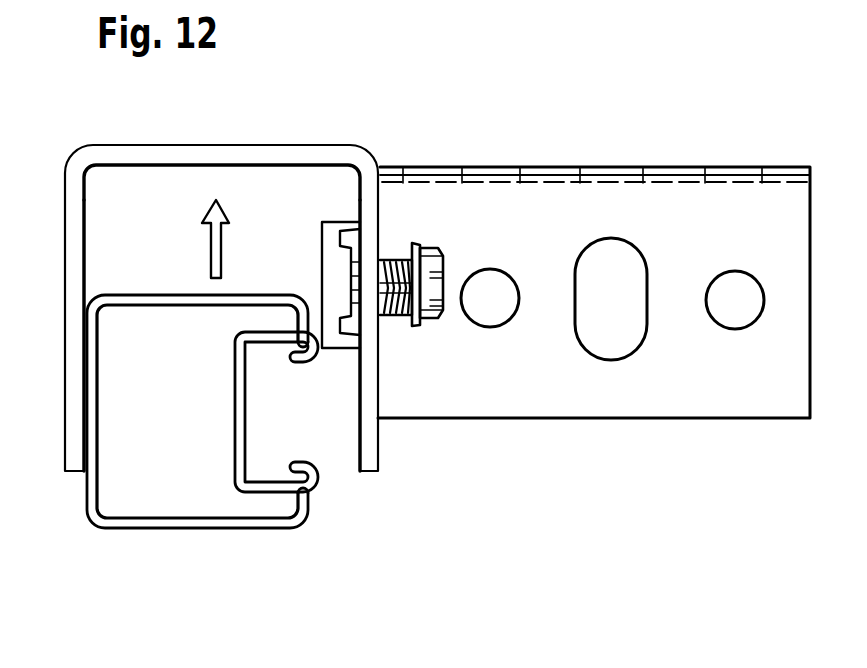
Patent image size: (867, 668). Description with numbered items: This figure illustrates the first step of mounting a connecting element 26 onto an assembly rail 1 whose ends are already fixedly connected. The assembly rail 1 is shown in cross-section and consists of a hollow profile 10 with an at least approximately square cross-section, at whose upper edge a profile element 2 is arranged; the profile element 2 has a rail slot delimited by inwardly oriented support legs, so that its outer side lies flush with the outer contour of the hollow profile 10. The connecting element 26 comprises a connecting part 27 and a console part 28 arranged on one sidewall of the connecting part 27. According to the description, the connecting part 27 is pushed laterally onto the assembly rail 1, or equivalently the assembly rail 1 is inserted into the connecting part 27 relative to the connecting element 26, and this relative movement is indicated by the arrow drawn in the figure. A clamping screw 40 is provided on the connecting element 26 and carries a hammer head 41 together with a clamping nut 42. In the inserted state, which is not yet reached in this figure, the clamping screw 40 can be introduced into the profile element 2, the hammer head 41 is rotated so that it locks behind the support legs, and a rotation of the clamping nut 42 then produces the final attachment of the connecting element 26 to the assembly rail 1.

The assembly rail 1 is at (163, 444).
The profile element 2 is at (235, 383).
The hollow profile 10 is at (150, 526).
The connecting element 26 is at (231, 279).
The connecting part 27 is at (118, 157).
The console part 28 is at (775, 205).
The clamping screw 40 is at (394, 324).
The hammer head 41 is at (335, 258).
The clamping nut 42 is at (432, 325).